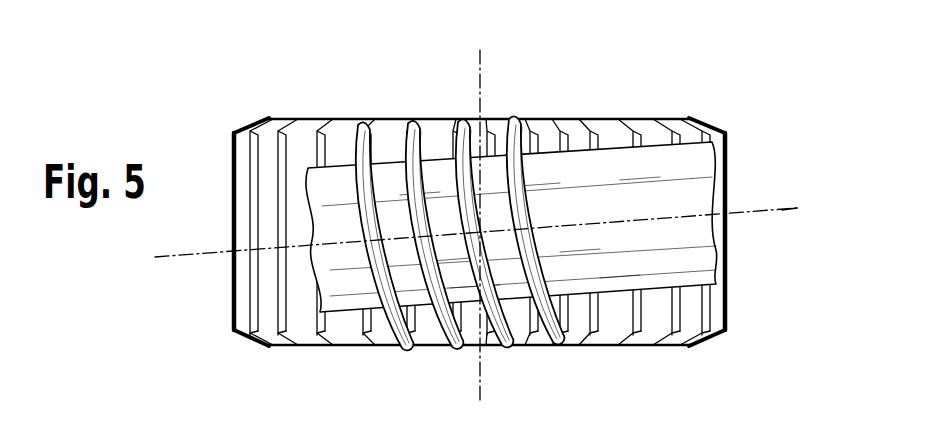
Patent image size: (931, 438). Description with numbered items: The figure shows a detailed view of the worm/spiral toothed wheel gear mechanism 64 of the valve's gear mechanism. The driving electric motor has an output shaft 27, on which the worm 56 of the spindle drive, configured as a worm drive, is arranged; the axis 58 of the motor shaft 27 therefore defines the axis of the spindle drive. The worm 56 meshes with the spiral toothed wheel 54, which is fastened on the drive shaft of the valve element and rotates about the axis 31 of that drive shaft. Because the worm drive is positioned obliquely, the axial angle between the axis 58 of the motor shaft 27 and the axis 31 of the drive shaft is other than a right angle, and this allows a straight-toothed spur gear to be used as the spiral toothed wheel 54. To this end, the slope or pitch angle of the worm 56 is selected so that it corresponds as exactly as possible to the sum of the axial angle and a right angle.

The output shaft 27 is at (692, 255).
The axis of the drive shaft 31 is at (480, 63).
The spiral toothed wheel 54 is at (658, 322).
The worm 56 is at (413, 347).
The axis of the motor shaft 58 is at (794, 207).
The worm/spiral toothed wheel gear mechanism 64 is at (518, 90).